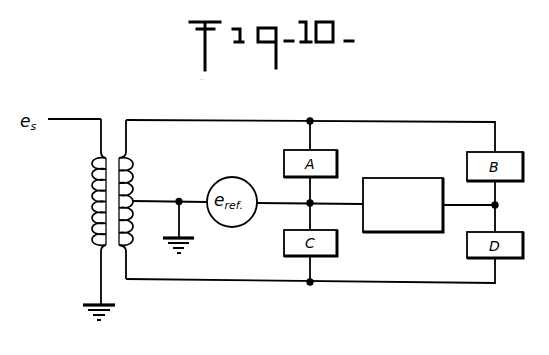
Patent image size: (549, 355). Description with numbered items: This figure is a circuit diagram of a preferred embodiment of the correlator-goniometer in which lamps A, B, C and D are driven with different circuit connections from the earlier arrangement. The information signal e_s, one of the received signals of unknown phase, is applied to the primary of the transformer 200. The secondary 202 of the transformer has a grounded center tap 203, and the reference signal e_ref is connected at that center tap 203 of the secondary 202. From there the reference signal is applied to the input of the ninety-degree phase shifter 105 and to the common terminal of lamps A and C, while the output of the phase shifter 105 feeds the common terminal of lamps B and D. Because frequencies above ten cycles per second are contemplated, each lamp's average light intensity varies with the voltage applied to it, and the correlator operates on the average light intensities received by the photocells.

The transformer 200 is at (110, 128).
The secondary 202 is at (131, 164).
The center tap 203 is at (162, 200).
The 90° phase shifter 105 is at (394, 177).